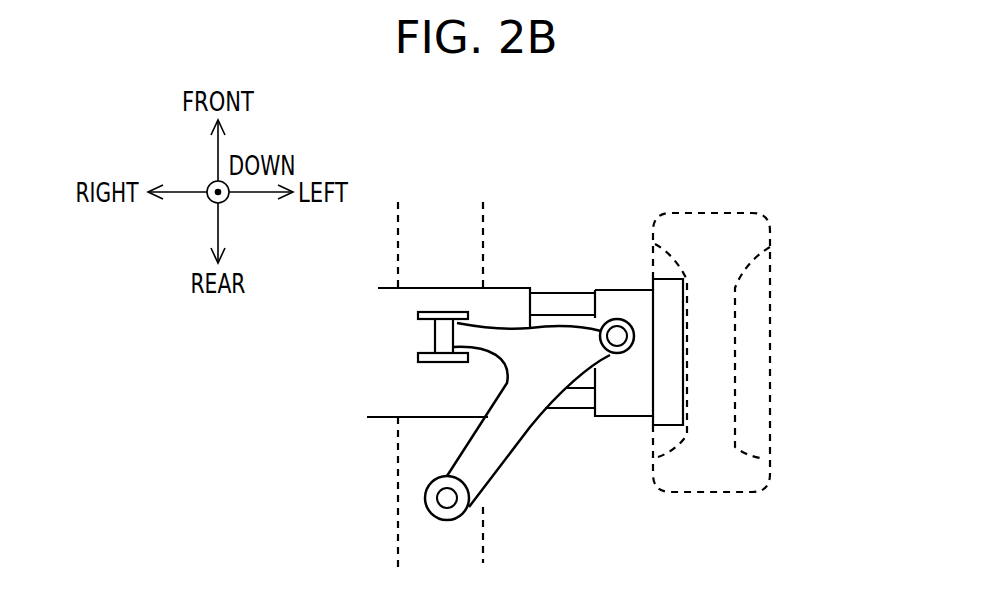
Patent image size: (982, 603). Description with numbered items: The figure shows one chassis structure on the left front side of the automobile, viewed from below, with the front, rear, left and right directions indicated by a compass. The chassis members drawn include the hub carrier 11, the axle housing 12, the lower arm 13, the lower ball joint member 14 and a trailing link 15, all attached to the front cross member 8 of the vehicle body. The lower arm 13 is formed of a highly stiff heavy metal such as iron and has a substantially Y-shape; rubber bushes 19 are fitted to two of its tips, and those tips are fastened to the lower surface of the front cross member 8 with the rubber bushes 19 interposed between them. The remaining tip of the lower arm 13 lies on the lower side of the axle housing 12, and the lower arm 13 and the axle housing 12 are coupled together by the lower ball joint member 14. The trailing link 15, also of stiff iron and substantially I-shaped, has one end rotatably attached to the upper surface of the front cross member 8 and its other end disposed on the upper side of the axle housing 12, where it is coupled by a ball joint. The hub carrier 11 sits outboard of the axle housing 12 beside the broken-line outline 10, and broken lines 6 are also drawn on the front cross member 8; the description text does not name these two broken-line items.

The frame member 6 is at (417, 237).
The front cross member 8 is at (398, 376).
The wheel 10 is at (723, 395).
The hub carrier 11 is at (668, 333).
The axle housing 12 is at (635, 393).
The lower arm 13 is at (488, 455).
The lower ball joint member 14 is at (618, 333).
The trailing link 15 is at (548, 302).
The rubber bush 19 is at (437, 335).